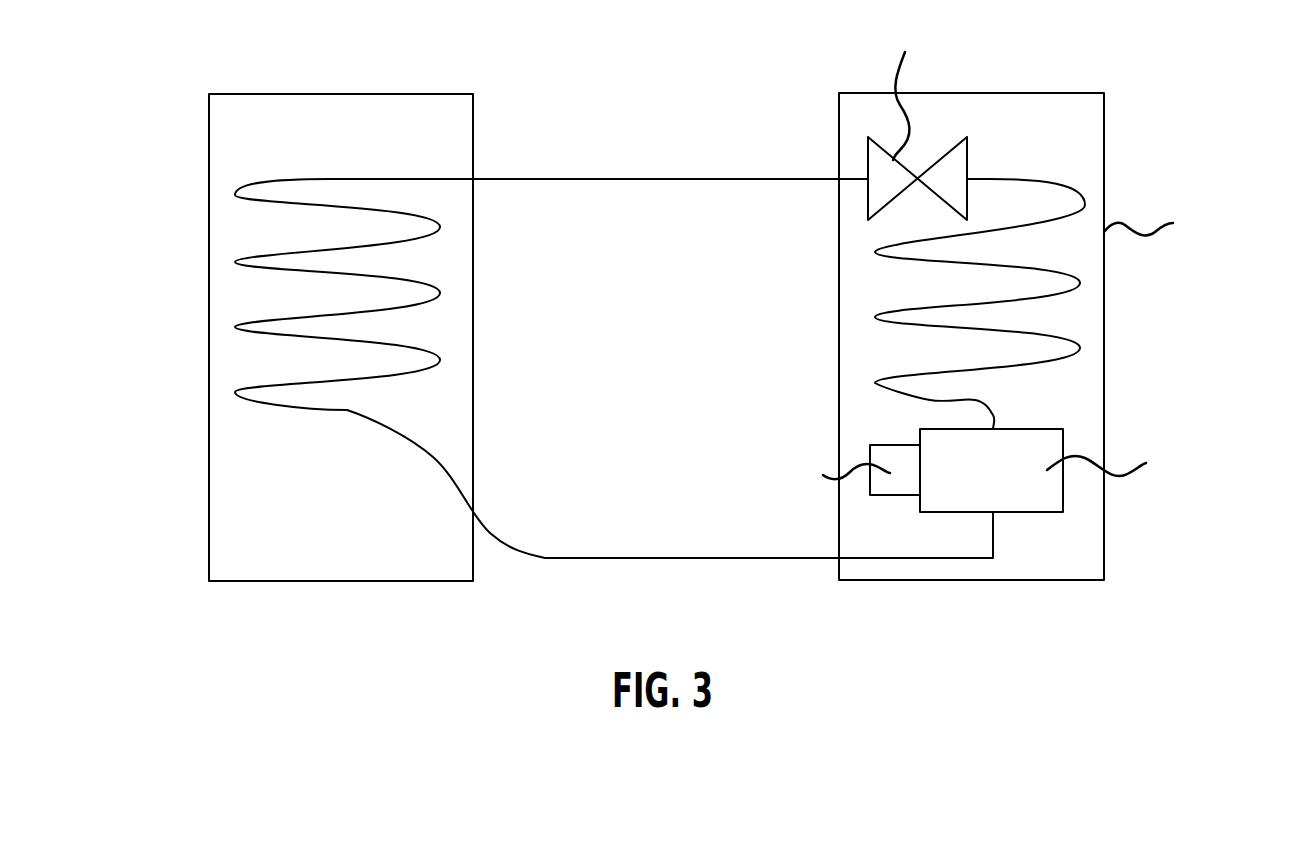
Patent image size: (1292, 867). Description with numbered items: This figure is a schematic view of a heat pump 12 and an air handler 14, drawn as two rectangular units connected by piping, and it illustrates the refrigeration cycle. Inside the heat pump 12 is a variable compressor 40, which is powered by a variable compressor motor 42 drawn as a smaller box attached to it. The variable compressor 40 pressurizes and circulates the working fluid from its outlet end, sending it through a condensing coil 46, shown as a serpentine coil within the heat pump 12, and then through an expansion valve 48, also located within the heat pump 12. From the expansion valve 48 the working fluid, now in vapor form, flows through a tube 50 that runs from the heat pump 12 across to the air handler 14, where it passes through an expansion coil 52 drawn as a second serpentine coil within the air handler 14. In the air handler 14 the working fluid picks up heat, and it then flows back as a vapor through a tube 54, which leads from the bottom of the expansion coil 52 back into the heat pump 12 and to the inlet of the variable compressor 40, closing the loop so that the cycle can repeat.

The heat pump 12 is at (958, 581).
The air handler 14 is at (209, 512).
The variable compressor 40 is at (1015, 493).
The variable compressor motor 42 is at (890, 448).
The condensing coil 46 is at (1035, 181).
The expansion valve 48 is at (868, 160).
The tube 50 is at (601, 179).
The expansion coil 52 is at (248, 186).
The tube 54 is at (665, 559).